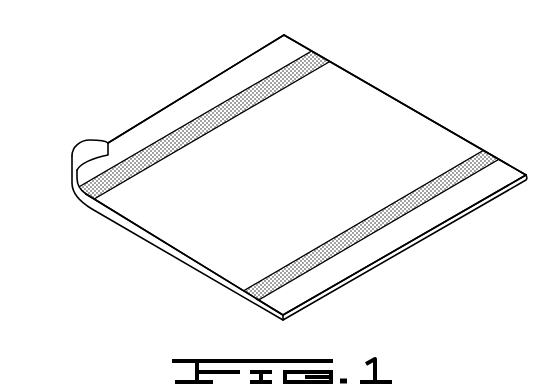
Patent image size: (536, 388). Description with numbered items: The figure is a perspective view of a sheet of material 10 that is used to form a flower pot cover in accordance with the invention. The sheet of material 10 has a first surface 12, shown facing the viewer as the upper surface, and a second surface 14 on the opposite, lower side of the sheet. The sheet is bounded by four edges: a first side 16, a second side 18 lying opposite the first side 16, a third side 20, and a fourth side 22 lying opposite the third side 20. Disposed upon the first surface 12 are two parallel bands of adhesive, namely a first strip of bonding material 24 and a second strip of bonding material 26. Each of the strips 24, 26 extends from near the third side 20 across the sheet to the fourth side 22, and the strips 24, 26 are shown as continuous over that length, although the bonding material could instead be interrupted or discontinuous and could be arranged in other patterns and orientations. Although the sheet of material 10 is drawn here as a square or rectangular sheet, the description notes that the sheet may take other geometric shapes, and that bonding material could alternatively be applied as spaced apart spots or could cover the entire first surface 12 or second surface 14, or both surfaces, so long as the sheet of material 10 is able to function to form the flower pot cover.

The sheet of material 10 is at (272, 169).
The first surface 12 is at (245, 72).
The second surface 14 is at (88, 153).
The first side 16 is at (152, 112).
The second side 18 is at (398, 250).
The third side 20 is at (428, 115).
The fourth side 22 is at (150, 242).
The first strip of bonding material 24 is at (288, 72).
The second strip of bonding material 26 is at (461, 163).